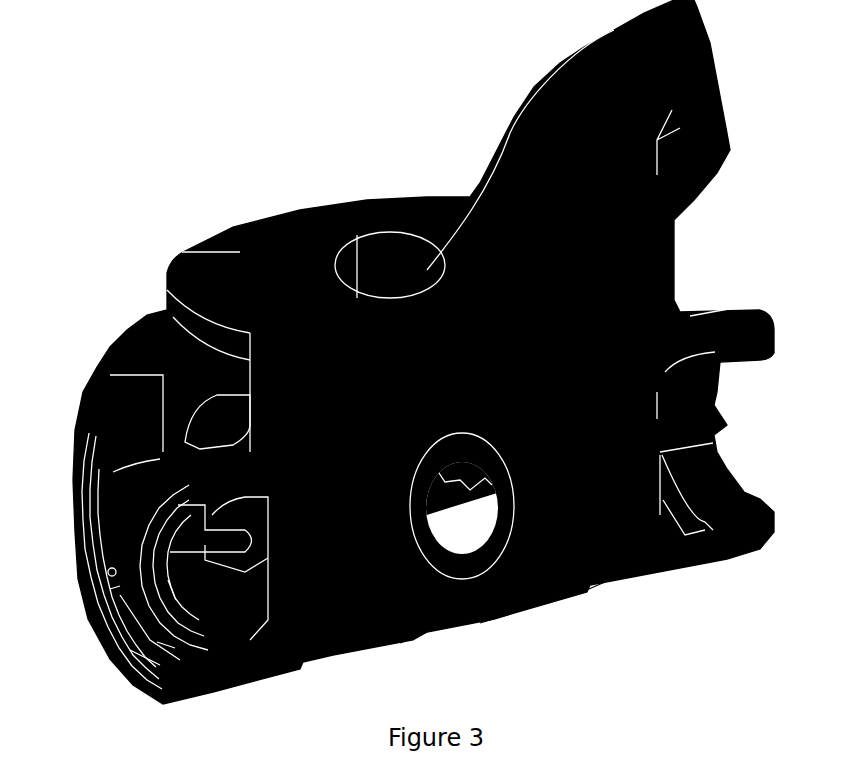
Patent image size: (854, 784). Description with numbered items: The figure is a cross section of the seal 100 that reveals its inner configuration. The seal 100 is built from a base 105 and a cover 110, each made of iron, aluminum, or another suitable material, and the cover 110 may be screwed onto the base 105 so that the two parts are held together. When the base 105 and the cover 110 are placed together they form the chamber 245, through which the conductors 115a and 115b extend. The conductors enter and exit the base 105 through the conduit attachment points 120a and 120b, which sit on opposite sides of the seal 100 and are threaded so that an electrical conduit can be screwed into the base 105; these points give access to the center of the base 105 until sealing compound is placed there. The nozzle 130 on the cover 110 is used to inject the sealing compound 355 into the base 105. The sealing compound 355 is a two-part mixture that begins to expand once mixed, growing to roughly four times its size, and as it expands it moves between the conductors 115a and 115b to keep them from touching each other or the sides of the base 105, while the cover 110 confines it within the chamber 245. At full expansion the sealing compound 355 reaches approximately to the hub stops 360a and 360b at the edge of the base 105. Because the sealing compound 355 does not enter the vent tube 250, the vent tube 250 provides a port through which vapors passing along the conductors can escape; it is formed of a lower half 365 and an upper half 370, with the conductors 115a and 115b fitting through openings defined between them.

The seal 100 is at (418, 41).
The base 105 is at (165, 343).
The cover 110 is at (182, 252).
The conductor 115a is at (108, 572).
The conductor 115b is at (110, 589).
The conduit attachment point 120a is at (157, 642).
The conduit attachment point 120b is at (720, 474).
The nozzle 130 is at (718, 79).
The chamber 245 is at (357, 235).
The vent tube 250 is at (454, 522).
The sealing compound 355 is at (590, 589).
The hub stop 360a is at (163, 455).
The hub stop 360b is at (770, 350).
The lower half 365 is at (494, 619).
The upper half 370 is at (417, 640).